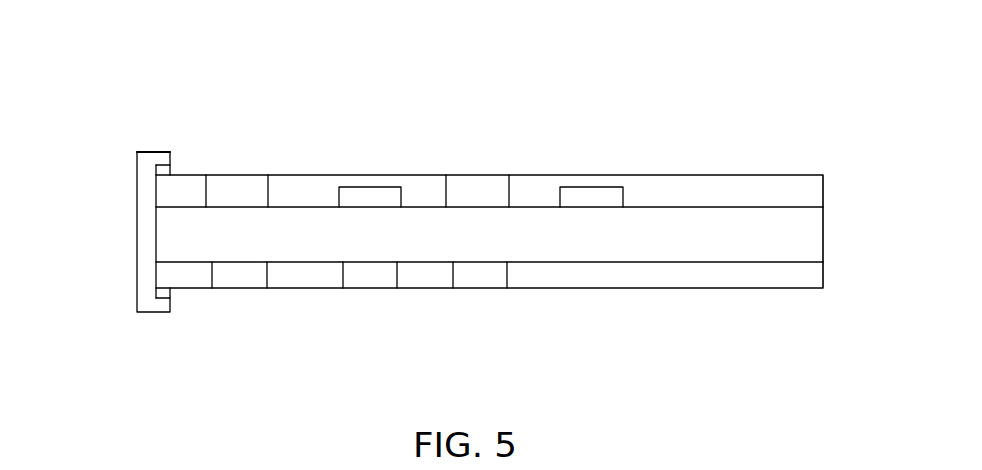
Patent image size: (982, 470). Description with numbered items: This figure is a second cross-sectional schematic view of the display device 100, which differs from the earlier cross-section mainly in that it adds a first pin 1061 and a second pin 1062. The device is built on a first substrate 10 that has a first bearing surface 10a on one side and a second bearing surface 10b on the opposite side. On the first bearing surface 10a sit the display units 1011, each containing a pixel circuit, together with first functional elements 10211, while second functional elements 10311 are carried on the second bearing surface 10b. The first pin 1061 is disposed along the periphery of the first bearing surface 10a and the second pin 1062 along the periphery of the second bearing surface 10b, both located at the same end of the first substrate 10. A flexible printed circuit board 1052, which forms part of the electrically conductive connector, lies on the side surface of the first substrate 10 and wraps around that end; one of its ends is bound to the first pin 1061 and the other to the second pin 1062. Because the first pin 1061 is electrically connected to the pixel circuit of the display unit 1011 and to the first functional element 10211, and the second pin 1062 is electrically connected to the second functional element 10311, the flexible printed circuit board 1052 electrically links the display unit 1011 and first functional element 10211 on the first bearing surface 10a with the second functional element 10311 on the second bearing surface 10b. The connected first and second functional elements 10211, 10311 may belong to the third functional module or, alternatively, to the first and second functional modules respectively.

The display device 100 is at (463, 89).
The first substrate 10 is at (796, 236).
The first bearing surface 10a is at (794, 207).
The second bearing surface 10b is at (741, 263).
The display unit 1011 is at (235, 196).
The first functional element 10211 is at (371, 200).
The second functional element 10311 is at (243, 273).
The flexible printed circuit board 1052 is at (137, 232).
The first pin 1061 is at (165, 167).
The second pin 1062 is at (160, 303).